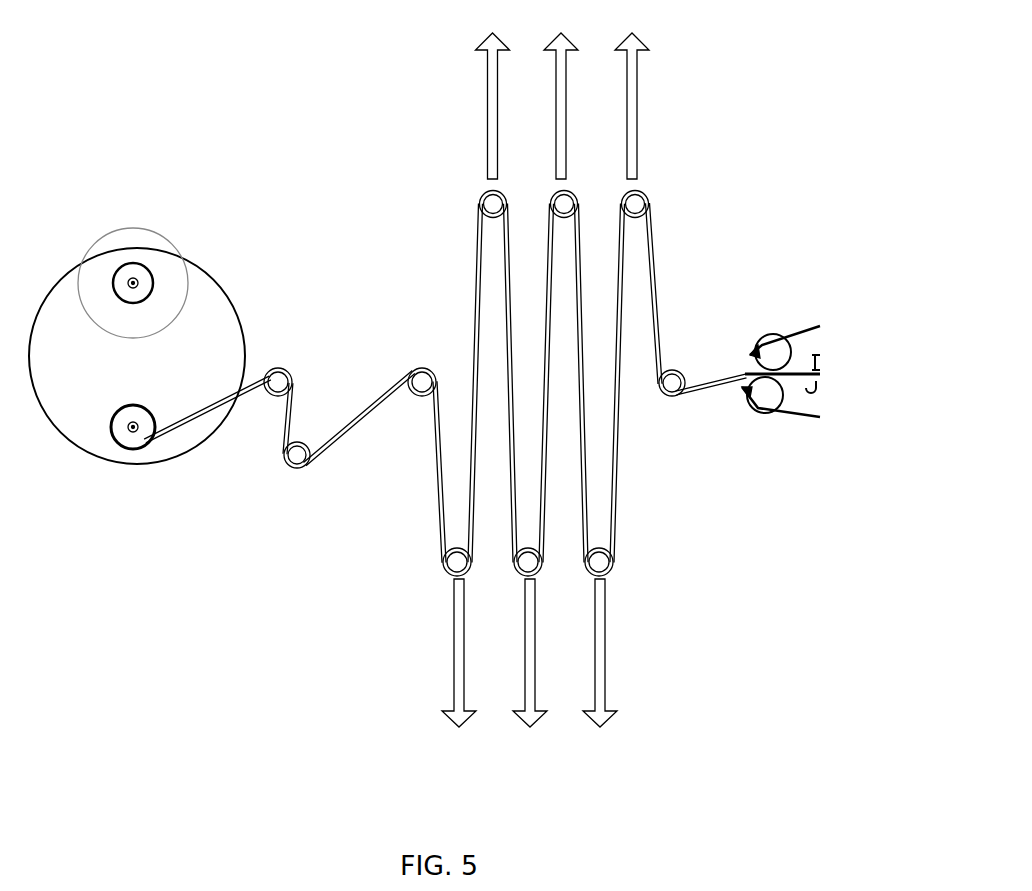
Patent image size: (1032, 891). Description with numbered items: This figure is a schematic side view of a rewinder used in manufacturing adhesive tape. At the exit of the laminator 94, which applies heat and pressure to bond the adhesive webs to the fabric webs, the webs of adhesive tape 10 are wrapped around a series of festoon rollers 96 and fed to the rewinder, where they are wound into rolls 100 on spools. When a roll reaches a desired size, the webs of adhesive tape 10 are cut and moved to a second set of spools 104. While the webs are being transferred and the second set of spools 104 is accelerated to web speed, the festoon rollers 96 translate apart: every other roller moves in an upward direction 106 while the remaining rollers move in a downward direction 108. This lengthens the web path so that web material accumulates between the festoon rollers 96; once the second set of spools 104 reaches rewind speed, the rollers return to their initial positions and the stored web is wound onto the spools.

The web of adhesive tape 10 is at (382, 398).
The laminator 94 is at (776, 428).
The festoon rollers 96 is at (483, 198).
The roll 100 is at (173, 243).
The second set of spools 104 is at (143, 448).
The upward direction 106 is at (638, 108).
The downward direction 108 is at (453, 653).